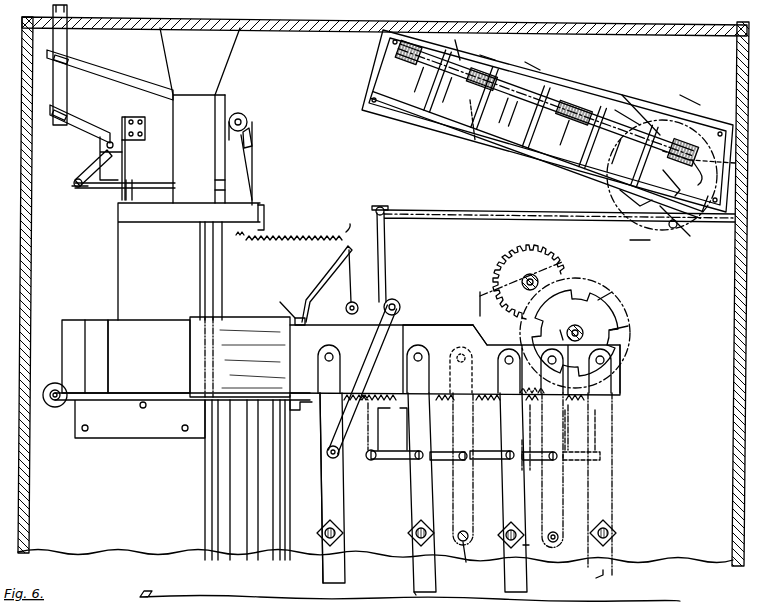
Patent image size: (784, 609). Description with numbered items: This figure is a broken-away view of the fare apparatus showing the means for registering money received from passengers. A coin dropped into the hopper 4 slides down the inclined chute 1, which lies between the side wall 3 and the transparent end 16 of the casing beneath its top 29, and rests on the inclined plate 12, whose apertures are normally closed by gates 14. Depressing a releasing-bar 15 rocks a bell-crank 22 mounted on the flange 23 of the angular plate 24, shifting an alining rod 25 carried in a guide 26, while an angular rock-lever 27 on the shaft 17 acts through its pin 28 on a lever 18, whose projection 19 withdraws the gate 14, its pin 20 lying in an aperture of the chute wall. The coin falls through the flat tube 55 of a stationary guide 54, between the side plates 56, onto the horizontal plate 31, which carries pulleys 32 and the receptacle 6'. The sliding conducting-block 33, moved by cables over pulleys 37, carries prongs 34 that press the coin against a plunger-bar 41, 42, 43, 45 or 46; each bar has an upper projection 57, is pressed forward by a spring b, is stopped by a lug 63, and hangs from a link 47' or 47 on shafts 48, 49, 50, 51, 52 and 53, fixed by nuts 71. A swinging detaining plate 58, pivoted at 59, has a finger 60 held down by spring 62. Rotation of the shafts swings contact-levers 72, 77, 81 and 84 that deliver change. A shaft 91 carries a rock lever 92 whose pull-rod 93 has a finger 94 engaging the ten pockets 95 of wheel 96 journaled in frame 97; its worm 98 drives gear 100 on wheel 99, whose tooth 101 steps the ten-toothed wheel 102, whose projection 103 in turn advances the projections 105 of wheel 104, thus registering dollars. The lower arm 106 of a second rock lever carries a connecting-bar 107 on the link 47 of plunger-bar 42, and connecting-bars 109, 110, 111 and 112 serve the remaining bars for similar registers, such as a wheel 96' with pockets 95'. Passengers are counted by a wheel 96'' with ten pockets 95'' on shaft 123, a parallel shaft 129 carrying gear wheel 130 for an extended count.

The chute 1 is at (200, 115).
The side wall of casing 3 is at (748, 72).
The hopper 4 is at (230, 55).
The coin receptacle 6' is at (228, 480).
The inclined plate 12 is at (118, 218).
The detaining plate or gate 14 is at (266, 213).
The releasing-bar 15 is at (68, 38).
The end of casing 16 is at (31, 262).
The horizontal shaft 17 is at (248, 121).
The lever 18 is at (252, 178).
The projection 19 is at (244, 236).
The horizontal pin 20 is at (220, 185).
The bell-crank 22 is at (80, 152).
The flange 23 is at (110, 130).
The inclined angular plate 24 is at (128, 116).
The alining rod 25 is at (80, 192).
The post or guide 26 is at (130, 182).
The rock-lever 27 is at (113, 70).
The pin 28 is at (251, 150).
The top of casing 29 is at (298, 33).
The horizontal partition or plate 31 is at (150, 394).
The pulley 32 is at (54, 408).
The conducting-block 33 is at (98, 320).
The prong 34 is at (142, 322).
The pulley 37 is at (532, 124).
The plunger-bar 41 is at (318, 325).
The plunger-bar 42 is at (458, 325).
The plunger-bar 43 is at (492, 352).
The plunger-bar 45 is at (532, 429).
The plunger-bar 46 is at (620, 382).
The link 47 is at (514, 492).
The link 47' is at (309, 488).
The shaft 48 is at (320, 533).
The shaft 49 is at (412, 542).
The shaft 50 is at (466, 560).
The shaft 51 is at (500, 542).
The shaft 52 is at (566, 542).
The shaft 53 is at (618, 532).
The stationary guide 54 is at (240, 346).
The vertical flat tube 55 is at (205, 262).
The side plate 56 is at (190, 345).
The projection 57 is at (292, 312).
The detaining plate 58 is at (326, 268).
The pivot 59 is at (355, 302).
The finger 60 is at (298, 318).
The spring 62 is at (305, 235).
The lug 63 is at (308, 392).
The nut 71 is at (520, 535).
The contact-lever 72 is at (326, 572).
The contact-lever 77 is at (414, 588).
The contact-lever 81 is at (527, 580).
The contact-lever 84 is at (615, 580).
The shaft 91 is at (400, 302).
The rock lever 92 is at (400, 310).
The pull-rod 93 is at (468, 218).
The transverse finger 94 is at (690, 238).
The pocket 95 is at (692, 206).
The pawl 95' is at (616, 202).
The pocket 95'' is at (635, 311).
The wheel 96 is at (645, 259).
The ratchet wheel 96' is at (575, 314).
The wheel 96'' is at (602, 333).
The frame 97 is at (474, 500).
The worm 98 is at (735, 163).
The wheel 99 is at (680, 95).
The gear 100 is at (625, 95).
The peripheral tooth 101 is at (620, 112).
The wheel 102 is at (530, 58).
The projection 103 is at (475, 130).
The wheel 104 is at (485, 48).
The transverse projection 105 is at (430, 78).
The lower arm 106 is at (392, 437).
The connecting-bar 107 is at (384, 465).
The connecting-bar 109 is at (446, 462).
The connecting-bar 110 is at (488, 450).
The connecting-bar 111 is at (534, 463).
The connecting-bar 112 is at (577, 462).
The shaft 123 is at (573, 322).
The shaft 129 is at (522, 286).
The gear wheel 130 is at (548, 252).
The spring b is at (572, 420).